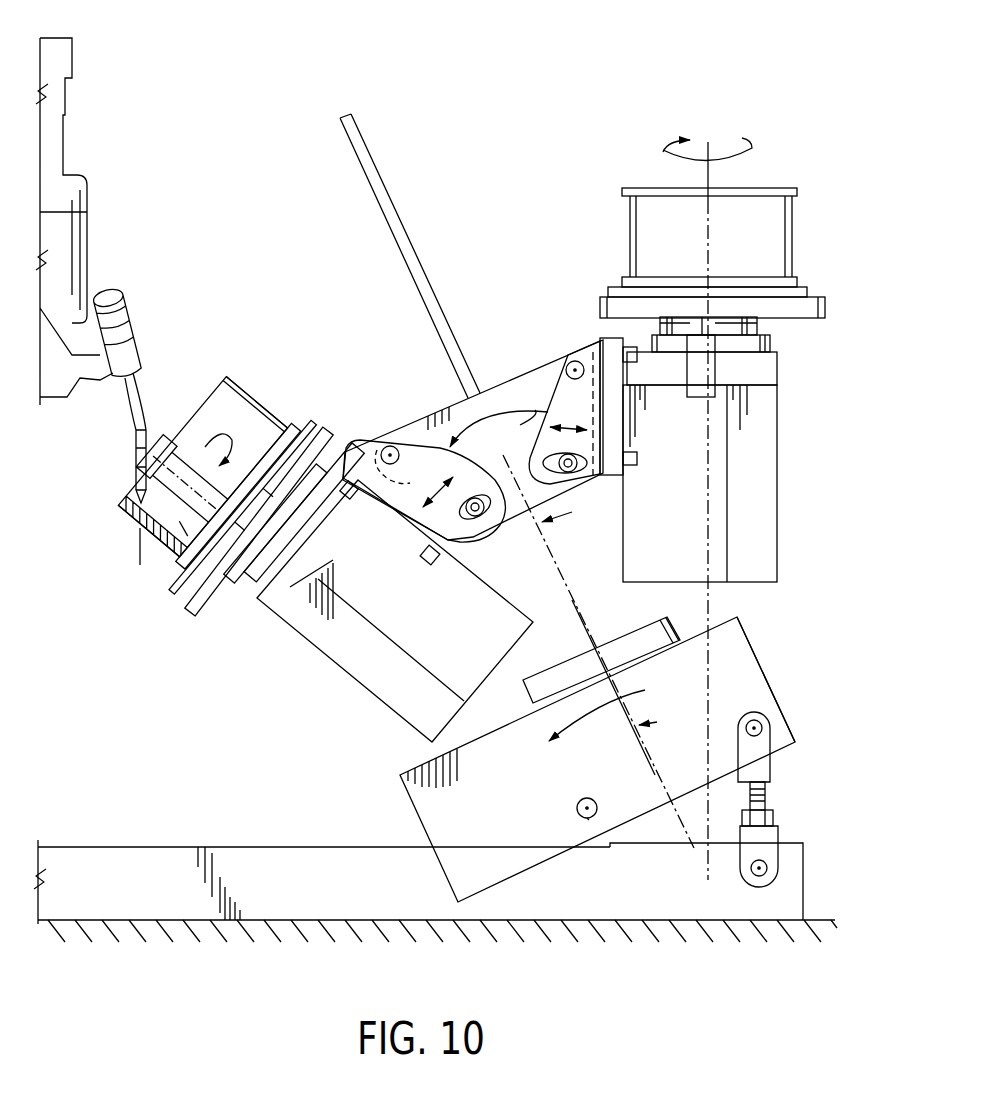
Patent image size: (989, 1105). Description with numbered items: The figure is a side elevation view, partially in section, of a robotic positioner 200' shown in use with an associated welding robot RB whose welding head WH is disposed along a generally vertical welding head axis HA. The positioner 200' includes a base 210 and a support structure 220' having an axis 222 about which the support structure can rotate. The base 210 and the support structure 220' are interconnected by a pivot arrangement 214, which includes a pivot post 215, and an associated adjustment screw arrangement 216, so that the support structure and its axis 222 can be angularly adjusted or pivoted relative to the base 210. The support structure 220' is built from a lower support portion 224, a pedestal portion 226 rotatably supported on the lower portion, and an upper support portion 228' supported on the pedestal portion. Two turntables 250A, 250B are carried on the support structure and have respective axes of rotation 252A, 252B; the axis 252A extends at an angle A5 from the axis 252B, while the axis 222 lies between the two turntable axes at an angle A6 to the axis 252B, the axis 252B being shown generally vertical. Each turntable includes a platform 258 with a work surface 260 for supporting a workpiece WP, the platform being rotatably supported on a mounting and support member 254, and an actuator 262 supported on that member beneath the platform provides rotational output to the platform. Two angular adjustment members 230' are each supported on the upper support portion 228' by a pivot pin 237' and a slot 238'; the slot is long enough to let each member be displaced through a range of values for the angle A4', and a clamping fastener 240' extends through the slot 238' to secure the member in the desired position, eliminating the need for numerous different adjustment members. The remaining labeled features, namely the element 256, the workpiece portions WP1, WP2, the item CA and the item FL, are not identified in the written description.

The robotic positioner 200' is at (230, 561).
The base 210 is at (655, 900).
The pivot arrangement 214 is at (582, 821).
The pivot post 215 is at (589, 820).
The adjustment screw arrangement 216 is at (777, 810).
The support structure 220' is at (737, 669).
The axis 222 is at (663, 773).
The lower support portion 224 is at (500, 852).
The pedestal portion 226 is at (557, 619).
The upper support portion 228' is at (471, 327).
The angular adjustment member 230' is at (602, 392).
The pivot pin 237' is at (458, 347).
The slot 238' is at (470, 461).
The fastener 240' is at (522, 506).
The turntable 250A is at (314, 426).
The turntable 250B is at (632, 290).
The axis of rotation 252A is at (347, 668).
The axis of rotation 252B is at (711, 150).
The mounting and support member 254 is at (256, 606).
The spindle housing 256 is at (400, 640).
The platform 258 is at (182, 608).
The work surface 260 is at (308, 428).
The actuator 262 is at (380, 705).
The workpiece WP is at (218, 372).
The first workpiece WP1 is at (114, 503).
The second workpiece WP2 is at (163, 477).
The welding robot RB is at (78, 87).
The welding head WH is at (130, 293).
The torch cable CA is at (117, 407).
The welding head axis HA is at (138, 545).
The floor FL is at (278, 918).
The angle A4' is at (582, 511).
The angle A5 is at (703, 673).
The angle A6 is at (703, 712).